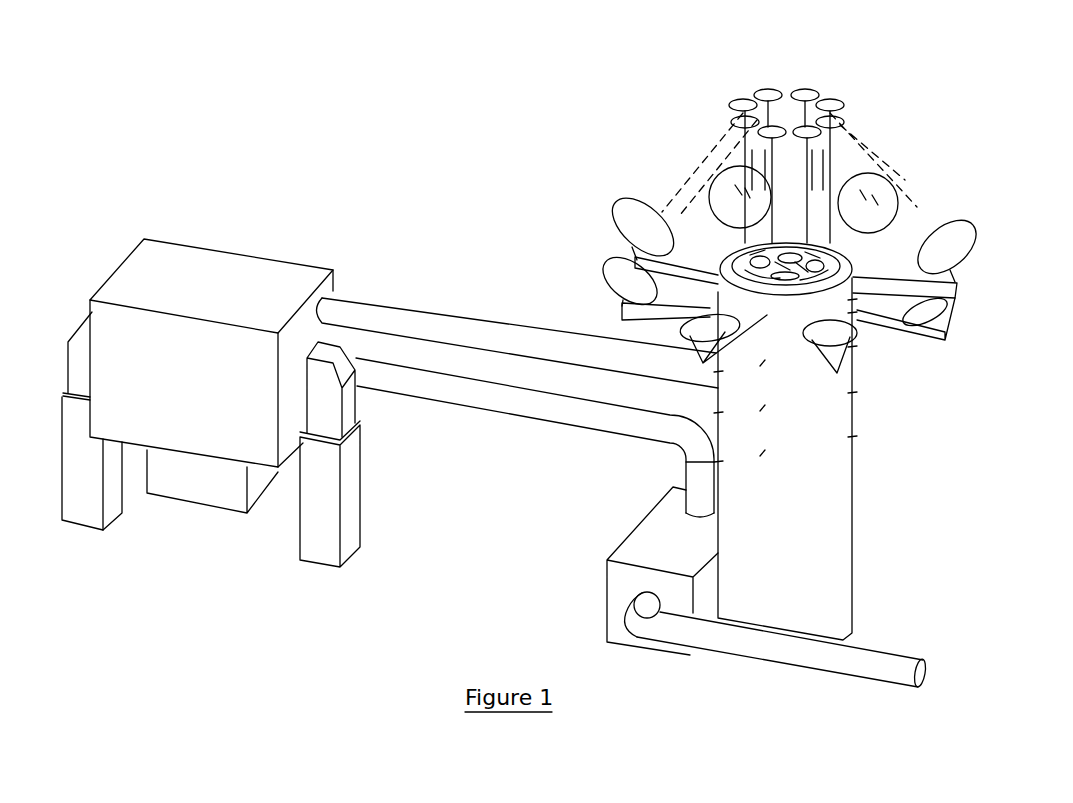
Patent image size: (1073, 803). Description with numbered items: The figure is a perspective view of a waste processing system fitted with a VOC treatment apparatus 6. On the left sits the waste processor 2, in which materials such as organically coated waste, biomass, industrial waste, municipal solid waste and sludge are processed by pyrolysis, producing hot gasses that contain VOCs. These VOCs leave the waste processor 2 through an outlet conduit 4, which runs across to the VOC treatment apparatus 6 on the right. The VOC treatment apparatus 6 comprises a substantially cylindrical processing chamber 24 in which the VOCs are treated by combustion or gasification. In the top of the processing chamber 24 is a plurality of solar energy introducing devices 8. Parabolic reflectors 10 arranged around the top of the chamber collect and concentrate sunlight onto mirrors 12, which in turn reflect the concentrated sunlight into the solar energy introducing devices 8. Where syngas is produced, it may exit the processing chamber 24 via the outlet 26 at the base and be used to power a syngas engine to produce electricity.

The waste processor 2 is at (227, 275).
The outlet conduit 4 is at (500, 330).
The VOC treatment apparatus 6 is at (828, 341).
The solar energy introducing devices 8 is at (810, 227).
The parabolic reflectors 10 is at (975, 223).
The mirrors 12 is at (843, 117).
The processing chamber 24 is at (823, 557).
The outlet 26 is at (902, 667).